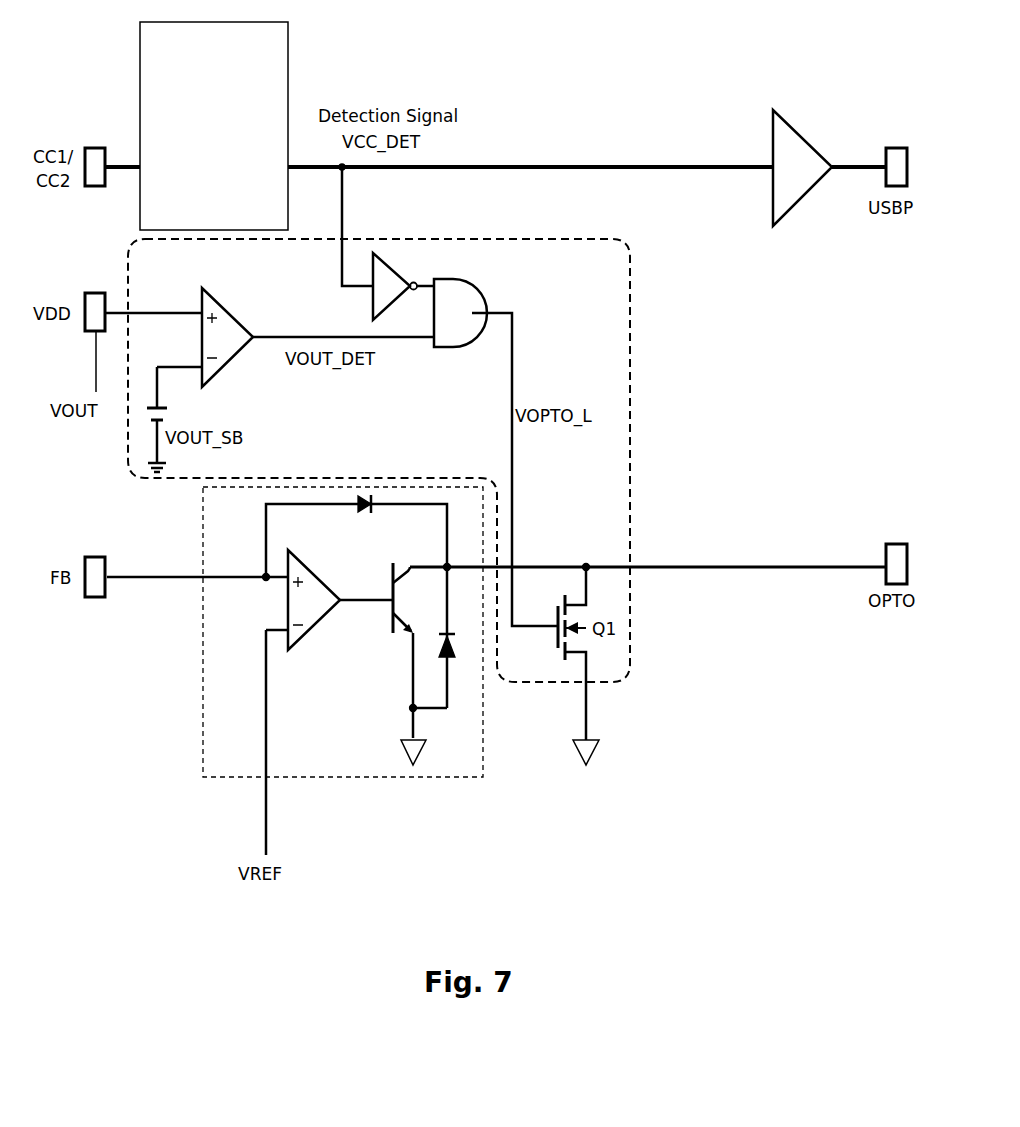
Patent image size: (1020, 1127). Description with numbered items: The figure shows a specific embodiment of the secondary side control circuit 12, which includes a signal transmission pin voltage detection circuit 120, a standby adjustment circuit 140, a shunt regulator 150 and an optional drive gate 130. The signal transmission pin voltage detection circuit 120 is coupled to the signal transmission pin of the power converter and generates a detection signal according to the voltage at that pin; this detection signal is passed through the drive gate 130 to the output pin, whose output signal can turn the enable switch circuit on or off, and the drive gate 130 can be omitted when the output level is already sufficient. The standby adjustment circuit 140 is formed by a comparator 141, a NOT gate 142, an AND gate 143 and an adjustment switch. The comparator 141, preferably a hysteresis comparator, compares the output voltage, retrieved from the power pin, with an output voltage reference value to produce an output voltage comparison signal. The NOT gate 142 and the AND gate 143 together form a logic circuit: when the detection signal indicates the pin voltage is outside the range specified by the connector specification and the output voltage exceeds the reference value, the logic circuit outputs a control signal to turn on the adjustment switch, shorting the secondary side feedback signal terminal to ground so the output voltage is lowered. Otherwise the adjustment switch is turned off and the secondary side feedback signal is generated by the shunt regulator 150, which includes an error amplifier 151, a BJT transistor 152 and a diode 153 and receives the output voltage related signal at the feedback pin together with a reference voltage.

The secondary side control circuit 12 is at (835, 60).
The signal transmission pin voltage detection circuit 120 is at (200, 216).
The drive gate 130 is at (773, 188).
The standby adjustment circuit 140 is at (632, 470).
The comparator 141 is at (232, 320).
The NOT gate 142 is at (373, 297).
The AND gate 143 is at (470, 291).
The shunt regulator 150 is at (243, 770).
The error amplifier 151 is at (325, 582).
The BJT transistor 152 is at (415, 598).
The diode 153 is at (450, 650).